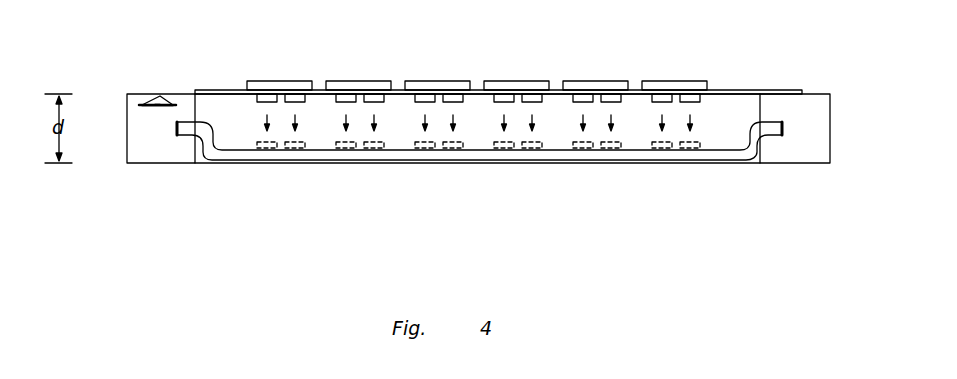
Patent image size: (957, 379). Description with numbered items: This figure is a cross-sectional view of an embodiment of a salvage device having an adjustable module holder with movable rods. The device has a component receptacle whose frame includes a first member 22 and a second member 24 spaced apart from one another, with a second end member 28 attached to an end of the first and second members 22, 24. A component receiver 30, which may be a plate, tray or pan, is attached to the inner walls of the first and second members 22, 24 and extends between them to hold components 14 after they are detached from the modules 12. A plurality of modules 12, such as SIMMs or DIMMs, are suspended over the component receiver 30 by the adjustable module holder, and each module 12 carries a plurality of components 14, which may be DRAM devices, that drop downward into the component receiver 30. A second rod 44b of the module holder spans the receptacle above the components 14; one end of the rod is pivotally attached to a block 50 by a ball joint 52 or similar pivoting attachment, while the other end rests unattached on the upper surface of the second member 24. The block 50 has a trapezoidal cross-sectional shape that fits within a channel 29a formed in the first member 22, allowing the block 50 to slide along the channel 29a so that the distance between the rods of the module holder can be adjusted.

The module 12 is at (267, 80).
The component 14 is at (278, 104).
The first member 22 is at (152, 163).
The second member 24 is at (798, 155).
The second end member 28 is at (745, 105).
The component receiver 30 is at (590, 156).
The second rod 44b is at (733, 90).
The block 50 is at (155, 107).
The ball joint 52 is at (160, 93).
The channel 29a is at (145, 107).